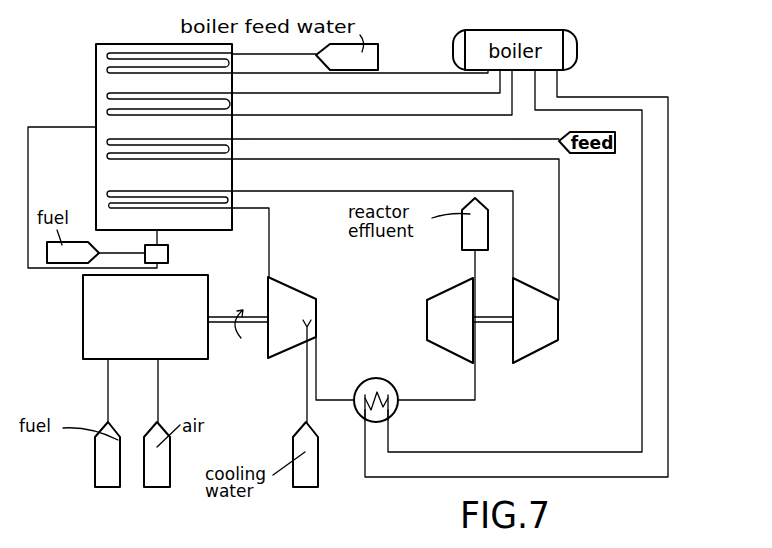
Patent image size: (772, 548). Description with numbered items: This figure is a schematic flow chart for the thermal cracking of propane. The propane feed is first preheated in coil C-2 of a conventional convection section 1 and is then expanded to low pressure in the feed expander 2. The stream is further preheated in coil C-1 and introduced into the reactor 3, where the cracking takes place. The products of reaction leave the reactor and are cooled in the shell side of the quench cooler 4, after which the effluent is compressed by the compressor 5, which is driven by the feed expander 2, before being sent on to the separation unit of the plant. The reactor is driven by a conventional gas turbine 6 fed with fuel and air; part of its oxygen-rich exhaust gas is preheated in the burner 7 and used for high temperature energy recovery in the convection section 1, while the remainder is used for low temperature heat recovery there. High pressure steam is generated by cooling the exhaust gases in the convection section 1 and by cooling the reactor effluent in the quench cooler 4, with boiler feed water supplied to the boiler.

The convection section 1 is at (97, 84).
The feed expander 2 is at (535, 302).
The reactor 3 is at (292, 303).
The quench cooler 4 is at (392, 410).
The compressor 5 is at (443, 303).
The gas turbine 6 is at (200, 298).
The burner 7 is at (168, 252).